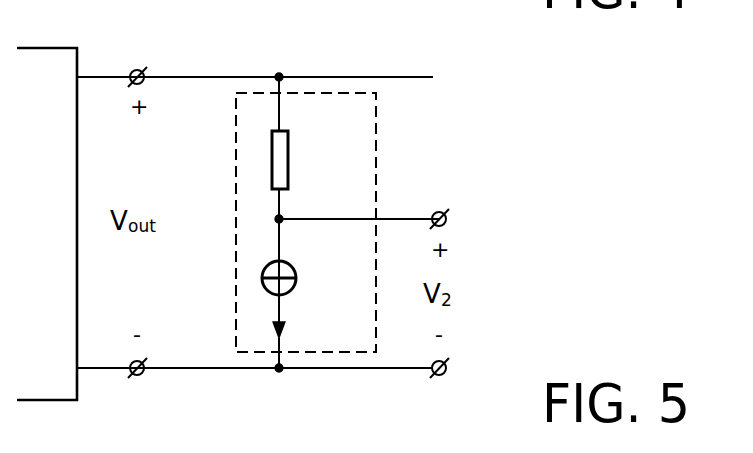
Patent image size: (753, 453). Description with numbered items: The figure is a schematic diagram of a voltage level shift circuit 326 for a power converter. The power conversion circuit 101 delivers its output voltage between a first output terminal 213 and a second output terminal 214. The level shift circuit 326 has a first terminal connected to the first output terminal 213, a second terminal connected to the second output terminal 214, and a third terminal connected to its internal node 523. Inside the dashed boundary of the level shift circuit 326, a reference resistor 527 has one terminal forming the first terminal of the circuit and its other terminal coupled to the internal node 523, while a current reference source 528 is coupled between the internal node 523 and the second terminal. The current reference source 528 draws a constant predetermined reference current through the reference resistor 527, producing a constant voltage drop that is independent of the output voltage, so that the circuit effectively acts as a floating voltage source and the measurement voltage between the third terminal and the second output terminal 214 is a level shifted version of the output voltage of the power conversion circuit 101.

The power conversion circuit 101 is at (50, 58).
The first output terminal 213 is at (190, 76).
The second output terminal 214 is at (186, 369).
The voltage level shift circuit 326 is at (377, 160).
The reference resistor 527 is at (271, 143).
The internal node 523 is at (278, 219).
The current reference source 528 is at (262, 278).